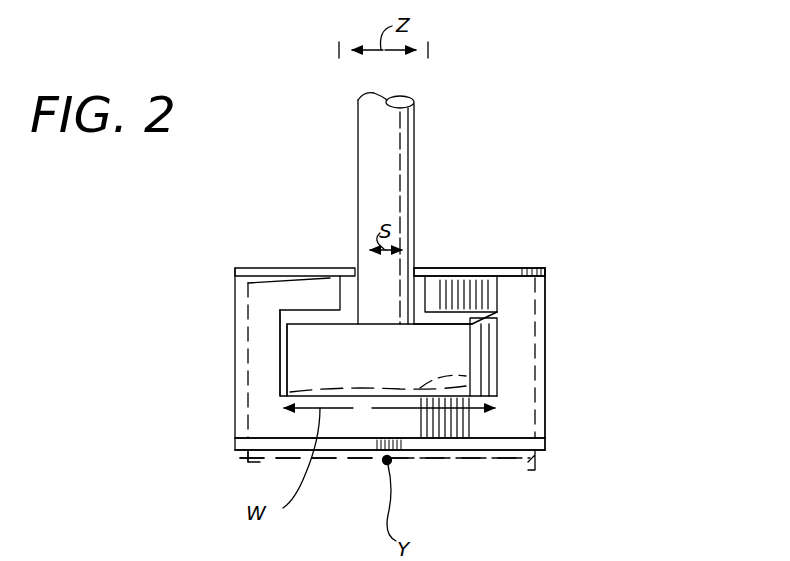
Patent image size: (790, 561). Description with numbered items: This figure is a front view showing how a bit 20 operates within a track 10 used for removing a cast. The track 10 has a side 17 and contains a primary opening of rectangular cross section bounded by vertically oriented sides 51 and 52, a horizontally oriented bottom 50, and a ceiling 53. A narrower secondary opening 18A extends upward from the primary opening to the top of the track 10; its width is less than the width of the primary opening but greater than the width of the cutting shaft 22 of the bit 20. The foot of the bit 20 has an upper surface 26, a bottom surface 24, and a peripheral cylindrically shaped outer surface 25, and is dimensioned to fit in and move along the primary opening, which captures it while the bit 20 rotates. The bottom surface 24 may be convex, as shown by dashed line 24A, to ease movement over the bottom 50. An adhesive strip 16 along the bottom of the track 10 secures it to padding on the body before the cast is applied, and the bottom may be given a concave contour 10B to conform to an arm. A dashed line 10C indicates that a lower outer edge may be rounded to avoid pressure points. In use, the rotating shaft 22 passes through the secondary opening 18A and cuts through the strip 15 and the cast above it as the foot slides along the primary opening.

The track 10 is at (562, 205).
The concave contour 10B is at (470, 457).
The rounded edge 10C is at (262, 460).
The strip 15 is at (545, 276).
The adhesive strip 16 is at (546, 445).
The side 17 is at (546, 350).
The secondary opening 18A is at (430, 292).
The bit 20 is at (422, 93).
The cutting shaft 22 is at (414, 158).
The bottom surface 24 is at (300, 392).
The convex shape 24A is at (462, 391).
The peripheral cylindrically shaped outer surface 25 is at (300, 344).
The upper surface 26 is at (470, 322).
The bottom 50 is at (363, 398).
The side 51 is at (280, 357).
The side 52 is at (497, 374).
The ceiling 53 is at (303, 310).